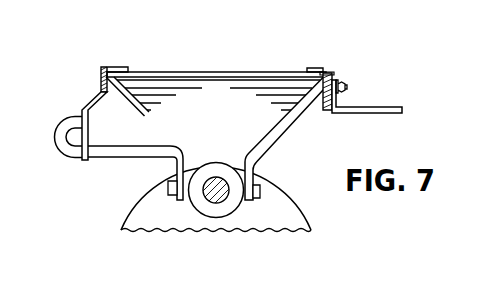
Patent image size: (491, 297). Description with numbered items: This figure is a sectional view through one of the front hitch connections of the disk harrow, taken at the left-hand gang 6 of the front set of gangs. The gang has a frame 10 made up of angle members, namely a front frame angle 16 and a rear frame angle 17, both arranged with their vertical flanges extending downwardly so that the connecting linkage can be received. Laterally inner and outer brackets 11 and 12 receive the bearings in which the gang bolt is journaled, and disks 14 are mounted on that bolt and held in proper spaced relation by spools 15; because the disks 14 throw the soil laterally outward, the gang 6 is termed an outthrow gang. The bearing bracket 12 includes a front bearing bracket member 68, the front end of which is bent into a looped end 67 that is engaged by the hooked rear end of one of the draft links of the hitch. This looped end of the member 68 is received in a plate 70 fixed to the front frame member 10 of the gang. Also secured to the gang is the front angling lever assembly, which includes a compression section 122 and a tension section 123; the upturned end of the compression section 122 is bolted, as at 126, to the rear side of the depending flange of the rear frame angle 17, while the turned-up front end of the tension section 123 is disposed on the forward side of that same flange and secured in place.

The left-hand gang 6 is at (346, 40).
The frame 10 is at (252, 70).
The laterally inner bracket 11 is at (128, 102).
The laterally outer bracket 12 is at (258, 166).
The disk 14 is at (197, 125).
The spool 15 is at (217, 184).
The front frame angle 16 is at (109, 67).
The rear frame angle 17 is at (318, 70).
The looped end 67 is at (62, 154).
The front bearing bracket member 68 is at (103, 158).
The plate 70 is at (91, 101).
The compression section 122 is at (378, 114).
The tension section 123 is at (327, 112).
The bolt 126 is at (347, 87).